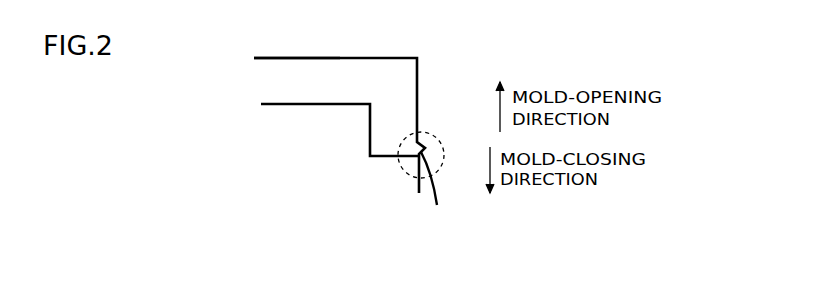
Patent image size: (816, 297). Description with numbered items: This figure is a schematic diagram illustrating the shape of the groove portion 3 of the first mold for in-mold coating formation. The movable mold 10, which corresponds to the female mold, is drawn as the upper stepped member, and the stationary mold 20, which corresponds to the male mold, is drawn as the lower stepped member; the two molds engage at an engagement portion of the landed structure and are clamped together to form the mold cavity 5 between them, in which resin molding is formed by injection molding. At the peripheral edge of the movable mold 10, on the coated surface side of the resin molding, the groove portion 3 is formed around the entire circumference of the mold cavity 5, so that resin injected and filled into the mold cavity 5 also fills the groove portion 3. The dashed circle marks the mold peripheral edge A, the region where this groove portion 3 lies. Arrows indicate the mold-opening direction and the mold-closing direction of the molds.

The movable mold 10 is at (440, 77).
The stationary mold 20 is at (355, 181).
The mold cavity 5 is at (330, 75).
The groove portion 3 is at (433, 186).
The mold peripheral edge A is at (426, 133).